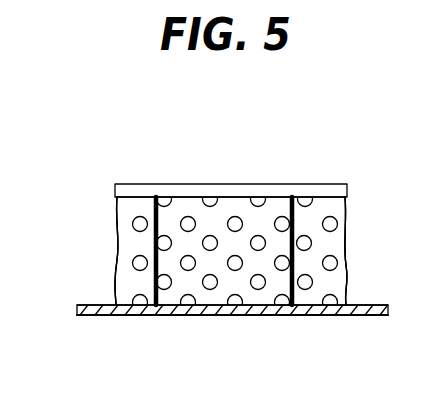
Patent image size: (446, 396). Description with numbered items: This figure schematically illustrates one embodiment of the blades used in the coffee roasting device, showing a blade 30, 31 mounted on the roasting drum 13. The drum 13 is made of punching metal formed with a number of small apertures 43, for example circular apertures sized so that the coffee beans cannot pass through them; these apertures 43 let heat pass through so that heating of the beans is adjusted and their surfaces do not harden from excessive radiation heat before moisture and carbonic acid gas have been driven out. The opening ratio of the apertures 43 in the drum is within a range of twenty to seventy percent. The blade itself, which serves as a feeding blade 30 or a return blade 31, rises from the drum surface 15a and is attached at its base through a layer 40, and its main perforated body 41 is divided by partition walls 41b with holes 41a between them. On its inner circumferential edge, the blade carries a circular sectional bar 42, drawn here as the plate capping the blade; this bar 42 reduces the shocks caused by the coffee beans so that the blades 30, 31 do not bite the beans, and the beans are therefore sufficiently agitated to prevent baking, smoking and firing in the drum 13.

The roasting drum 13 is at (162, 320).
The upper surface of base plate 15a is at (98, 305).
The feeding blade 30 is at (96, 192).
The return blade 31 is at (231, 251).
The bonding layer 40 is at (127, 297).
The perforated body 41 is at (194, 197).
The holes 41a is at (366, 170).
The partition walls 41b is at (157, 197).
The circular sectional bar 42 is at (258, 185).
The small apertures 43 is at (210, 244).